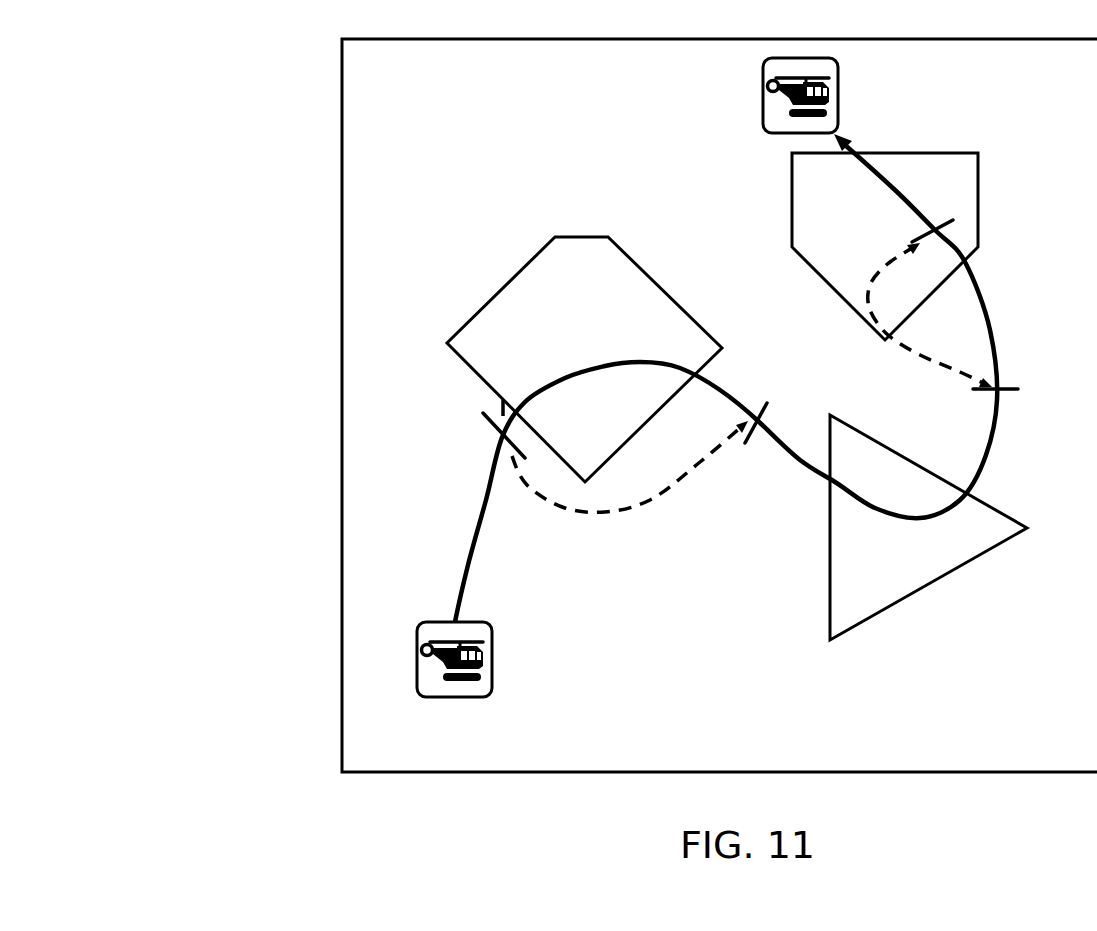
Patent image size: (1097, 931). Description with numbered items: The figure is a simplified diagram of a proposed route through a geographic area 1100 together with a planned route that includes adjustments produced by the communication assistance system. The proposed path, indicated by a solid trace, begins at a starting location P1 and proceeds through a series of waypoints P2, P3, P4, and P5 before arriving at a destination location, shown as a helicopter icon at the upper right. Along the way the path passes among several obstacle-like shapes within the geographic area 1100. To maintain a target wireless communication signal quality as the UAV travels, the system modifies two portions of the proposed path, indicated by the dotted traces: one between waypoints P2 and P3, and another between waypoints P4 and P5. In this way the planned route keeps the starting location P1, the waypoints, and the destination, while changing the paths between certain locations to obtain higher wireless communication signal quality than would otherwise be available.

The geographic area 1100 is at (200, 112).
The starting location P1 is at (448, 640).
The waypoint P2 is at (477, 431).
The waypoint P3 is at (751, 452).
The waypoint P4 is at (1025, 396).
The waypoint P5 is at (910, 225).